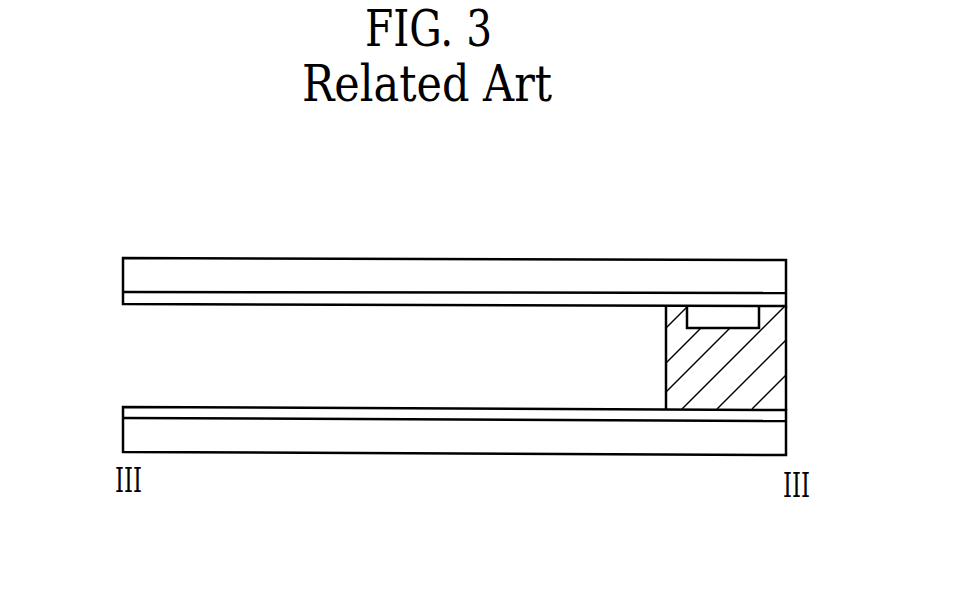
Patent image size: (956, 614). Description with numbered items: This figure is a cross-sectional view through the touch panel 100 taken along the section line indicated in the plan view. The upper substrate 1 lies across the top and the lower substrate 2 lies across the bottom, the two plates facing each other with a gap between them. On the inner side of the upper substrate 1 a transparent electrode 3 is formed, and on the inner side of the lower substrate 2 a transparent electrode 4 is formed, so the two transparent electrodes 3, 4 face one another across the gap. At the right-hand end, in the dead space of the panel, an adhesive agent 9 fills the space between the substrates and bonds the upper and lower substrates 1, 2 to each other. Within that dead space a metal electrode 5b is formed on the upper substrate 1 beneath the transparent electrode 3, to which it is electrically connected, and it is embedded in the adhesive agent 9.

The touch panel 100 is at (595, 251).
The upper substrate 1 is at (133, 277).
The transparent electrode 3 is at (132, 298).
The transparent electrode 4 is at (128, 412).
The lower substrate 2 is at (133, 432).
The adhesive agent 9 is at (779, 360).
The metal electrode 5b is at (747, 317).